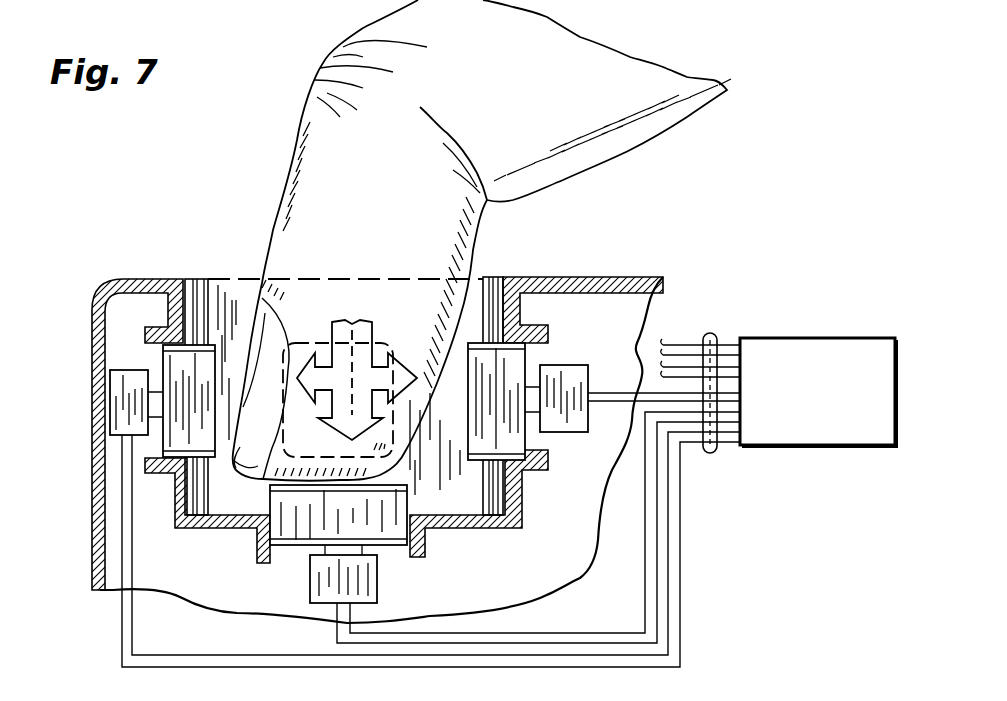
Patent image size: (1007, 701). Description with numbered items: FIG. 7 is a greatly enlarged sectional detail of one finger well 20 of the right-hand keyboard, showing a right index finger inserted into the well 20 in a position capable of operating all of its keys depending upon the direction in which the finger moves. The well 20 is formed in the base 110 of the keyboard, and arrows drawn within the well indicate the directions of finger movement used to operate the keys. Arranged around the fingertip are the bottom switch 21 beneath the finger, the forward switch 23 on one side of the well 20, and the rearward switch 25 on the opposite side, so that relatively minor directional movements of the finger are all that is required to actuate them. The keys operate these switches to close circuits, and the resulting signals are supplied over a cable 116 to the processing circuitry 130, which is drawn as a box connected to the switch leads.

The finger well 20 is at (195, 318).
The bottom switch 21 is at (407, 486).
The forward switch 23 is at (216, 362).
The rearward switch 25 is at (468, 450).
The base 110 is at (95, 546).
The cable 116 is at (724, 308).
The processing circuitry 130 is at (838, 308).